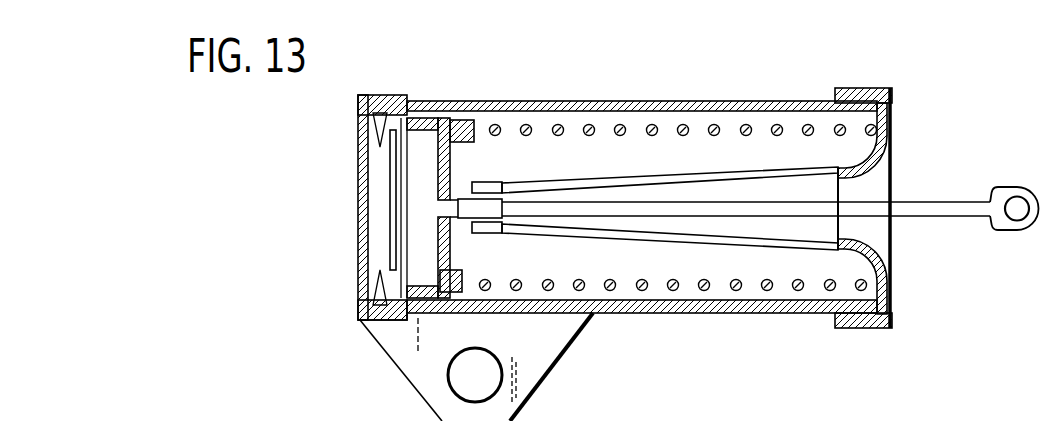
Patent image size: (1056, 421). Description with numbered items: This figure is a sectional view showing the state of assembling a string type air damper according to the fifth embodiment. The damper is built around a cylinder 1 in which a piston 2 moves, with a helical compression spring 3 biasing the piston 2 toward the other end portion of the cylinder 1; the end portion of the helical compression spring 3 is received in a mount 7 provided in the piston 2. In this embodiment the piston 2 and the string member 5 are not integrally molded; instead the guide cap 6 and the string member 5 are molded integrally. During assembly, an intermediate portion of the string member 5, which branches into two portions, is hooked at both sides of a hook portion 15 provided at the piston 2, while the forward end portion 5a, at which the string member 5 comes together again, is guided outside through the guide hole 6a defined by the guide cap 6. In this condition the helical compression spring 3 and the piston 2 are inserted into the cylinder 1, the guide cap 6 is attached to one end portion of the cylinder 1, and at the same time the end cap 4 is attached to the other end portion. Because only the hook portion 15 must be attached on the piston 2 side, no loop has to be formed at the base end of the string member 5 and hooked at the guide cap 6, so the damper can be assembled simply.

The cylinder 1 is at (565, 101).
The piston 2 is at (440, 245).
The helical compression spring 3 is at (703, 290).
The end cap 4 is at (358, 203).
The string member 5 is at (693, 175).
The forward end portion 5a is at (1008, 186).
The guide cap 6 is at (850, 88).
The guide hole 6a is at (884, 188).
The mount 7 is at (475, 135).
The hook portion 15 is at (488, 203).